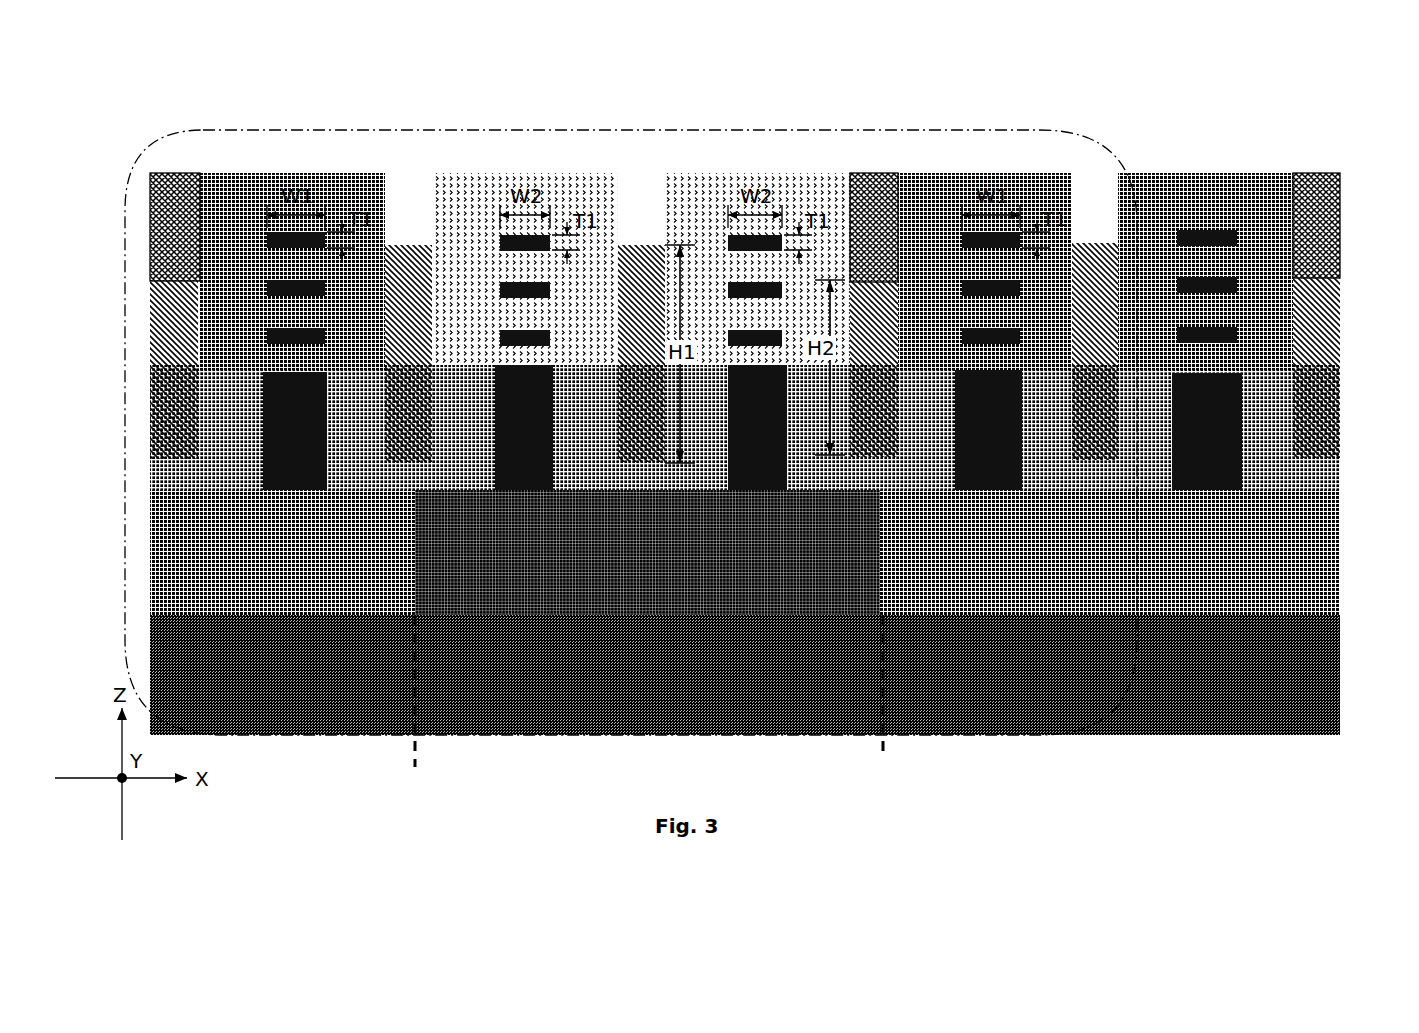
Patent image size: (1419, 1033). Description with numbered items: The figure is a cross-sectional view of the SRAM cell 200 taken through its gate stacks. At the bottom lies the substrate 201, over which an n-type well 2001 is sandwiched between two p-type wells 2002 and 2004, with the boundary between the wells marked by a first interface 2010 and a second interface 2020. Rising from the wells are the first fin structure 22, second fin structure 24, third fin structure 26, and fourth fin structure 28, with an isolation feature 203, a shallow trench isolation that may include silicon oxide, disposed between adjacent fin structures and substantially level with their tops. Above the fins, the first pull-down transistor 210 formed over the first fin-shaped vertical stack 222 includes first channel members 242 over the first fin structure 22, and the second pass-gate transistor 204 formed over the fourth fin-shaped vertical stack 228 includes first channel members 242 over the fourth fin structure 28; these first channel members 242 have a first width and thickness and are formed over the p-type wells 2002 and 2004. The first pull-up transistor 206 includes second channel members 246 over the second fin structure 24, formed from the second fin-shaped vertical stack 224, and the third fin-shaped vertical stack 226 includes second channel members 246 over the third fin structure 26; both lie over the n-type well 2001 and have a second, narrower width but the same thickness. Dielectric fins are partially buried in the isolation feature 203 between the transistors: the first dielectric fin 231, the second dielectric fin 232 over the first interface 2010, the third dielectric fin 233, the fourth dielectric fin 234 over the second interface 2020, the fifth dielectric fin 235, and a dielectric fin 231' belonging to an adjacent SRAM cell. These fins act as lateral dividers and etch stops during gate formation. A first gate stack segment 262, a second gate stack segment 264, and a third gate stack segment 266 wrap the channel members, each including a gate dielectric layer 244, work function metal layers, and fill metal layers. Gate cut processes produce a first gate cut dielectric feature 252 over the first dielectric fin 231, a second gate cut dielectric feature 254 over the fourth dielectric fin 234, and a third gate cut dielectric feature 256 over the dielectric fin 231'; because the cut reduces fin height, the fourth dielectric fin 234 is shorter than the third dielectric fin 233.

The SRAM cell 200 is at (127, 195).
The substrate 201 is at (756, 667).
The n-type well 2001 is at (656, 545).
The p-type well 2002 is at (316, 545).
The p-type well 2004 is at (1136, 535).
The first interface 2010 is at (417, 705).
The second interface 2020 is at (875, 700).
The isolation feature 203 is at (250, 472).
The second pass-gate transistor 204 is at (1082, 218).
The first pull-up transistor 206 is at (499, 221).
The first pull-down transistor 210 is at (266, 222).
The first fin-shaped vertical stack 222 is at (296, 288).
The second fin-shaped vertical stack 224 is at (525, 290).
The third fin-shaped vertical stack 226 is at (748, 147).
The fourth fin-shaped vertical stack 228 is at (1198, 149).
The first fin structure 22 is at (263, 420).
The second fin structure 24 is at (495, 465).
The third fin structure 26 is at (728, 448).
The fourth fin structure 28 is at (955, 442).
The first dielectric fin 231 is at (129, 370).
The dielectric fin 231' is at (1294, 295).
The second dielectric fin 232 is at (402, 243).
The third dielectric fin 233 is at (643, 243).
The fourth dielectric fin 234 is at (862, 298).
The fifth dielectric fin 235 is at (1105, 300).
The first channel members 242 is at (272, 330).
The gate dielectric layer 244 is at (323, 330).
The second channel members 246 is at (500, 342).
The first gate cut dielectric feature 252 is at (178, 178).
The second gate cut dielectric feature 254 is at (875, 190).
The third gate cut dielectric feature 256 is at (1320, 190).
The first gate stack segment 262 is at (340, 185).
The second gate stack segment 264 is at (665, 185).
The third gate stack segment 266 is at (1112, 190).